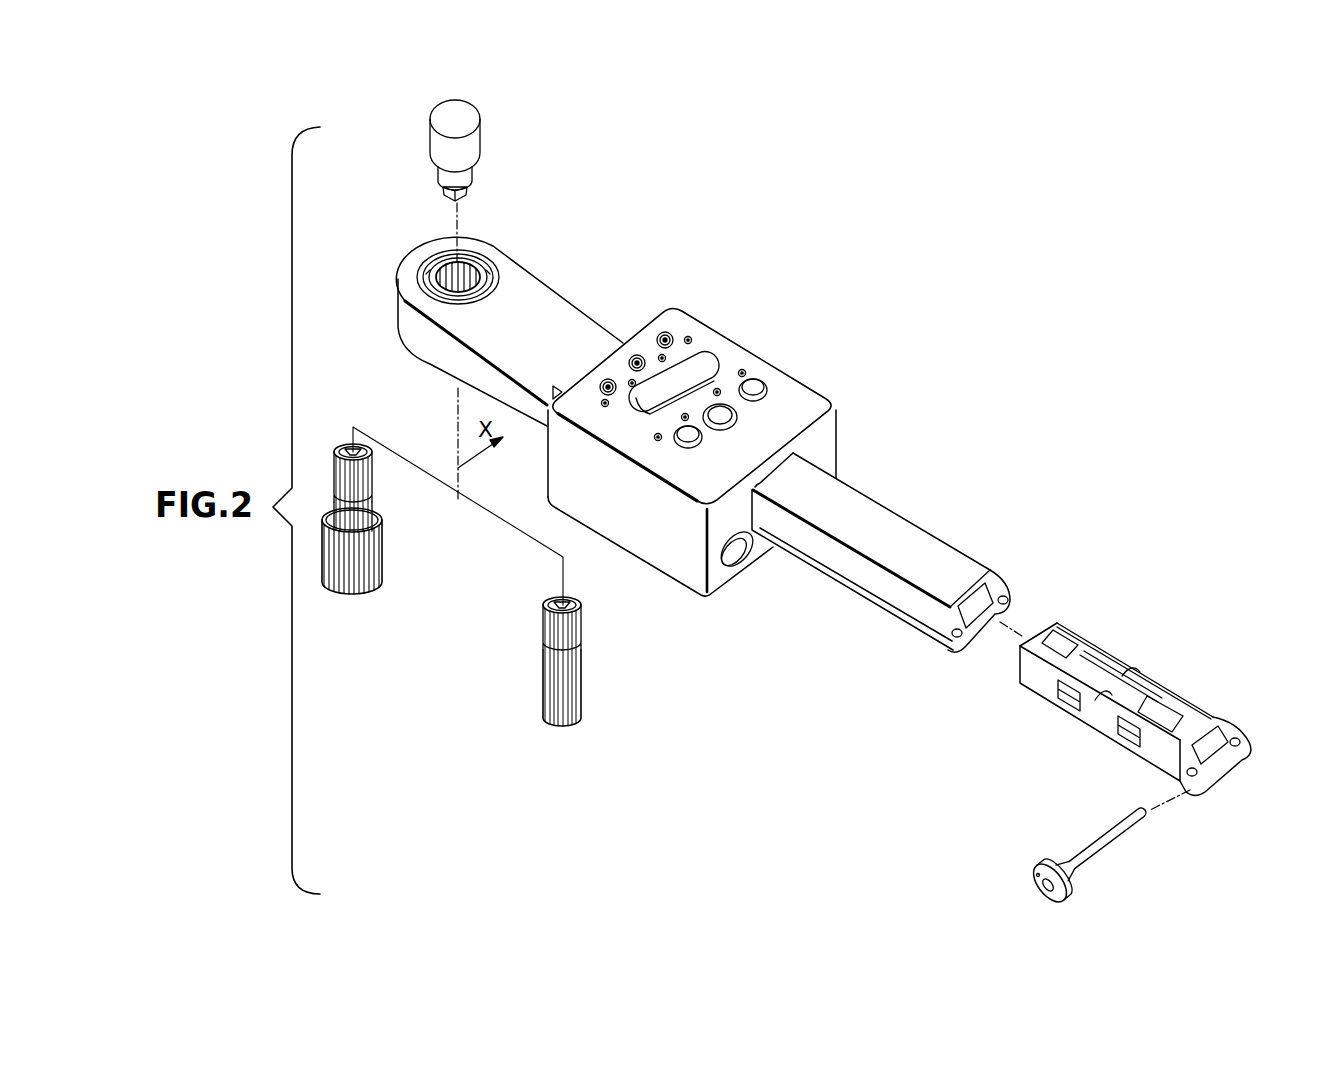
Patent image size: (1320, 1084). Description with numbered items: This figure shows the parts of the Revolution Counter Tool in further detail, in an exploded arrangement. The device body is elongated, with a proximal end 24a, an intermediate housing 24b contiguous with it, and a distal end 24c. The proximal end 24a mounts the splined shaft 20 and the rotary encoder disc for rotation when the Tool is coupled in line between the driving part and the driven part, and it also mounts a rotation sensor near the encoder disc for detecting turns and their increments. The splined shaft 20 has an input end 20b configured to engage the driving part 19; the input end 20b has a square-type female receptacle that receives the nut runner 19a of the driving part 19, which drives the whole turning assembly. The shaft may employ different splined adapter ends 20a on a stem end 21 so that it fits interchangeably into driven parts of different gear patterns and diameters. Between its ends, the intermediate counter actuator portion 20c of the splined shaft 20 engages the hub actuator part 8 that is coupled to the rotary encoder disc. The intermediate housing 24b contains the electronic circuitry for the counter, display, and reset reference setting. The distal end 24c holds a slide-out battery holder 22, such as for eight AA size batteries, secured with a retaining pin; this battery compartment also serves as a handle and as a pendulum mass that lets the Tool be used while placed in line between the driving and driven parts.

The hub actuator part 8 is at (474, 271).
The driving part 19 is at (478, 138).
The nut runner 19a is at (468, 192).
The splined shaft 20 is at (494, 603).
The output end 20a is at (363, 583).
The input end 20b is at (372, 470).
The counter actuator section 20c is at (375, 505).
The stem end 21 is at (582, 700).
The slide-out battery holder 22 is at (1037, 680).
The proximal end 24a is at (532, 323).
The intermediate housing 24b is at (762, 340).
The distal end 24c is at (922, 513).